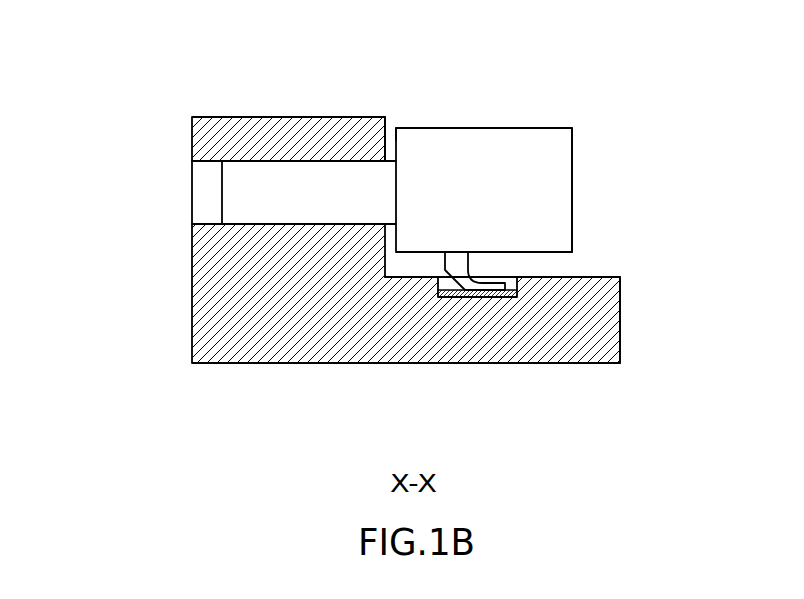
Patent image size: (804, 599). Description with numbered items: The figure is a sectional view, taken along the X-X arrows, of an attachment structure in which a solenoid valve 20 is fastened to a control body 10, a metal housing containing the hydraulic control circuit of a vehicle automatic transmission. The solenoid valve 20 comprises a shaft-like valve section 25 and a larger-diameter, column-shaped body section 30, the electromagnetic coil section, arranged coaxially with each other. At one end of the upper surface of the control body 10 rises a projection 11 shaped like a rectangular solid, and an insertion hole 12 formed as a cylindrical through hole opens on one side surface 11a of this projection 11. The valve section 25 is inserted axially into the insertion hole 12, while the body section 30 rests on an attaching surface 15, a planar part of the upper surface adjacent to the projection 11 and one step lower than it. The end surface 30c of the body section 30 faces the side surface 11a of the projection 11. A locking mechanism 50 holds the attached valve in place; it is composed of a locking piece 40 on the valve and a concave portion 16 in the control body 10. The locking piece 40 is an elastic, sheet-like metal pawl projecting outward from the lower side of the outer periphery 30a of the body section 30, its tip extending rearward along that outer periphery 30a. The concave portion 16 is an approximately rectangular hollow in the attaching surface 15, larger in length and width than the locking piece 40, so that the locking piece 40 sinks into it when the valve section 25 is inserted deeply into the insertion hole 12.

The control body 10 is at (192, 307).
The attaching surface 15 is at (600, 277).
The projection 11 is at (253, 117).
The insertion hole 12 is at (200, 167).
The valve section 25 is at (307, 168).
The side surface of the projection 11a is at (397, 129).
The solenoid valve 20 is at (503, 116).
The body section 30 is at (550, 147).
The end surface of the body section 30c is at (398, 128).
The outer periphery of the body section 30a is at (557, 166).
The concave portion 16 is at (448, 289).
The locking piece 40 is at (489, 292).
The locking mechanism 50 is at (513, 418).